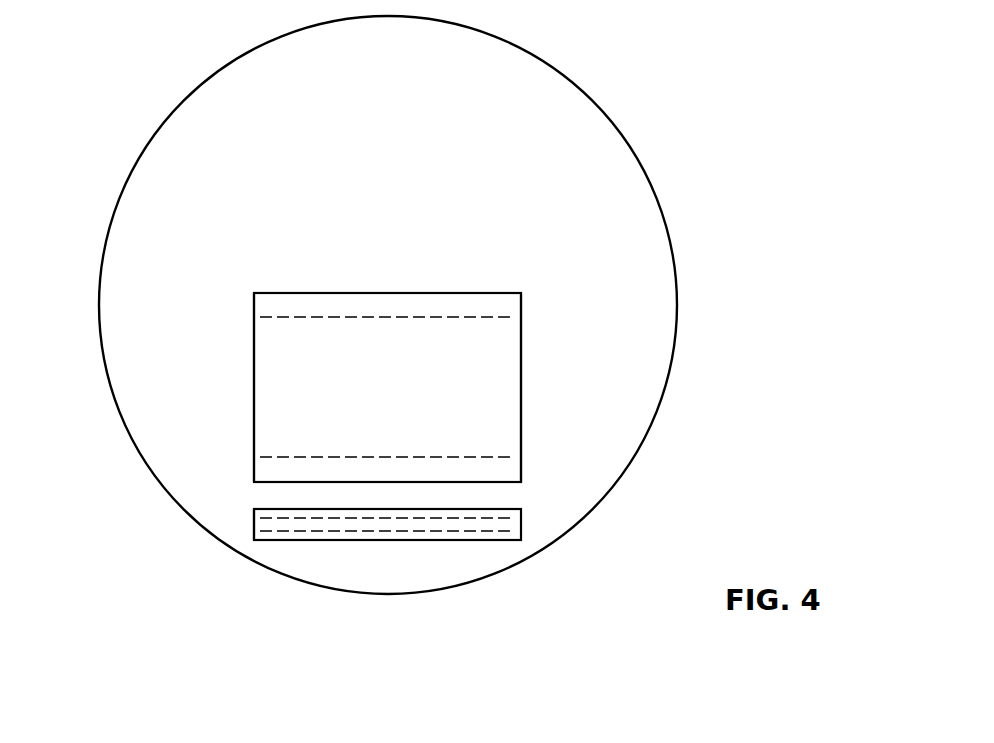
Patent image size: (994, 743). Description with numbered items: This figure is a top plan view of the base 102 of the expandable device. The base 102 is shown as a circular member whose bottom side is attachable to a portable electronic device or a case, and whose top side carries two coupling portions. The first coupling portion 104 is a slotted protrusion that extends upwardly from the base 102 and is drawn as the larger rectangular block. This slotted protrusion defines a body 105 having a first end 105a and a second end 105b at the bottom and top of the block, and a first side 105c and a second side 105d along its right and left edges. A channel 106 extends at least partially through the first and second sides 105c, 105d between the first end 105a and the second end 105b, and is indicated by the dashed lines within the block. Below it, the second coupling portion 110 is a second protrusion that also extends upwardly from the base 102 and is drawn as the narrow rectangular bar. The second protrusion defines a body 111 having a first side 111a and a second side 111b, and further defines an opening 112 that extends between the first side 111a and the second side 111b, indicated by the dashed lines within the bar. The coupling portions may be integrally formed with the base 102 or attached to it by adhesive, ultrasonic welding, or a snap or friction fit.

The base 102 is at (408, 94).
The first coupling portion 104 is at (533, 418).
The body 105 is at (500, 374).
The first end 105a is at (288, 495).
The second end 105b is at (466, 281).
The first side 105c is at (533, 330).
The second side 105d is at (242, 377).
The channel 106 is at (270, 419).
The second coupling portion 110 is at (521, 526).
The body 111 is at (467, 530).
The first side 111a is at (543, 515).
The second side 111b is at (242, 525).
The opening 112 is at (373, 527).